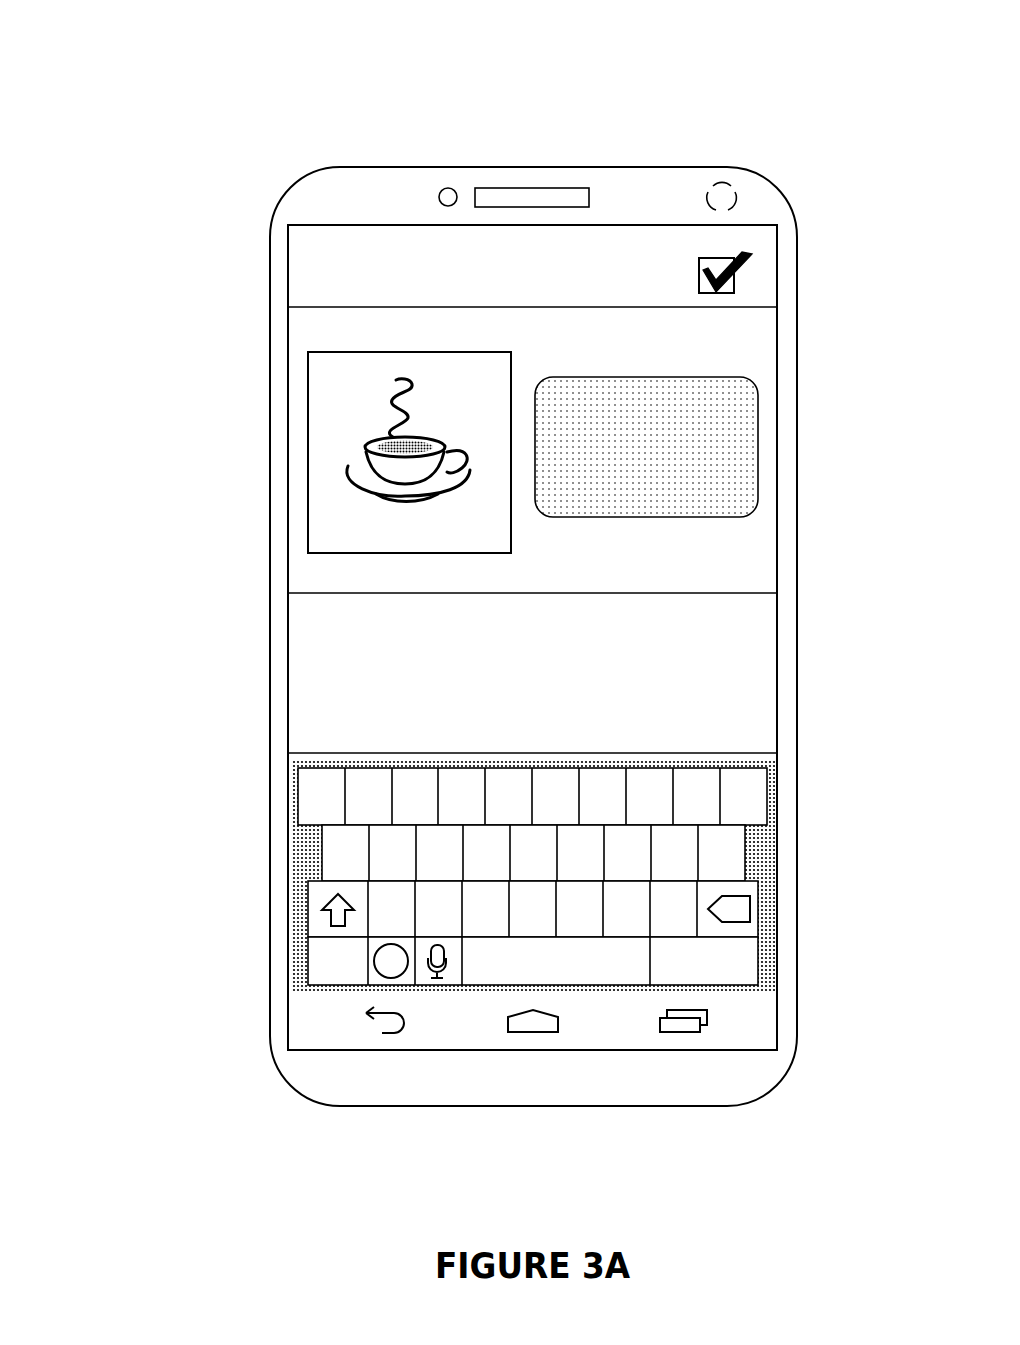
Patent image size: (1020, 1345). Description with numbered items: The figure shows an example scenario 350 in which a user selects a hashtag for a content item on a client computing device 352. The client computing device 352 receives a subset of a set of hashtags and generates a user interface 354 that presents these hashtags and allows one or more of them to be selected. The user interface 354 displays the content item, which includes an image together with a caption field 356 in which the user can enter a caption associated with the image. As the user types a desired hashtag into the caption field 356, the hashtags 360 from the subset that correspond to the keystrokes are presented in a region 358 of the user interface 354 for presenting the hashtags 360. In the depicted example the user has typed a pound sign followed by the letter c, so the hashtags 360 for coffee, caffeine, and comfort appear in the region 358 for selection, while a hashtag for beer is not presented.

The example scenario 350 is at (120, 46).
The client computing device 352 is at (310, 186).
The user interface 354 is at (288, 318).
The caption field 356 is at (735, 377).
The region 358 is at (288, 612).
The hashtags 360 is at (297, 675).